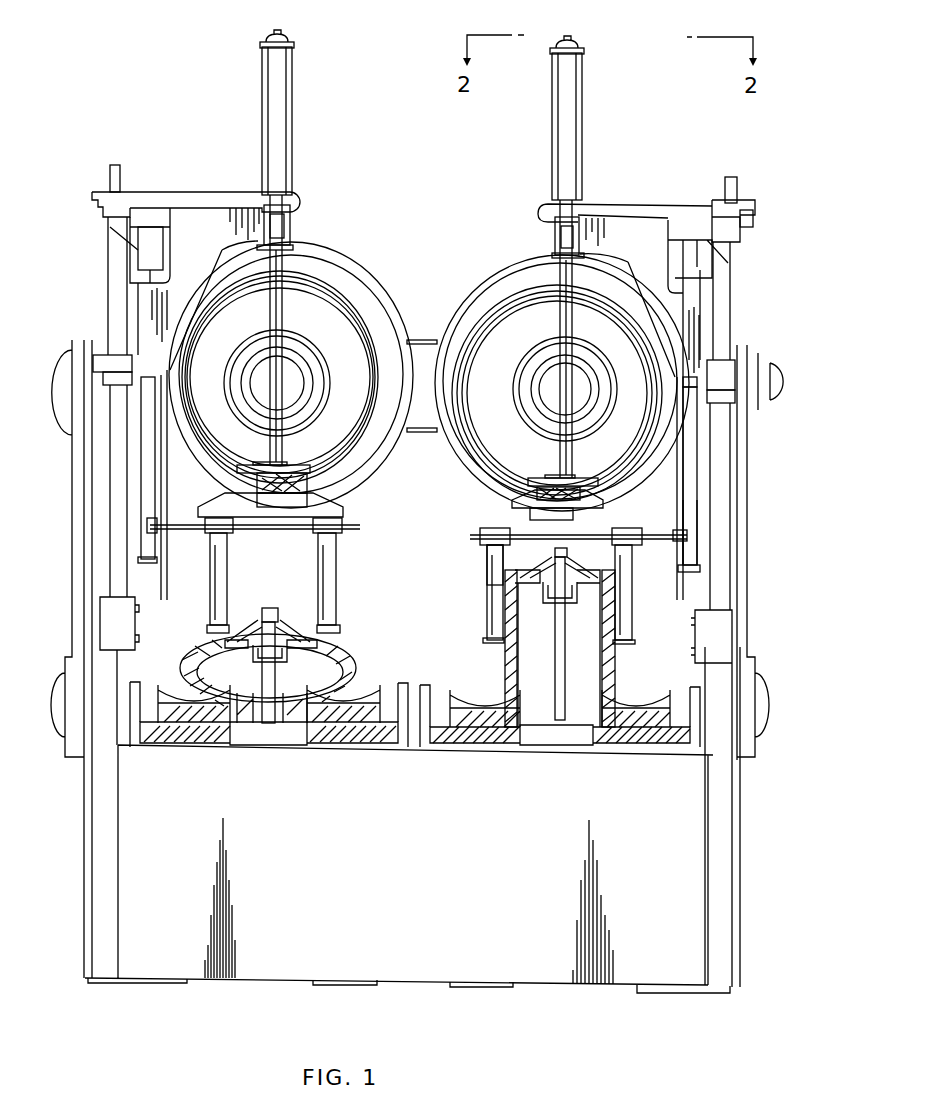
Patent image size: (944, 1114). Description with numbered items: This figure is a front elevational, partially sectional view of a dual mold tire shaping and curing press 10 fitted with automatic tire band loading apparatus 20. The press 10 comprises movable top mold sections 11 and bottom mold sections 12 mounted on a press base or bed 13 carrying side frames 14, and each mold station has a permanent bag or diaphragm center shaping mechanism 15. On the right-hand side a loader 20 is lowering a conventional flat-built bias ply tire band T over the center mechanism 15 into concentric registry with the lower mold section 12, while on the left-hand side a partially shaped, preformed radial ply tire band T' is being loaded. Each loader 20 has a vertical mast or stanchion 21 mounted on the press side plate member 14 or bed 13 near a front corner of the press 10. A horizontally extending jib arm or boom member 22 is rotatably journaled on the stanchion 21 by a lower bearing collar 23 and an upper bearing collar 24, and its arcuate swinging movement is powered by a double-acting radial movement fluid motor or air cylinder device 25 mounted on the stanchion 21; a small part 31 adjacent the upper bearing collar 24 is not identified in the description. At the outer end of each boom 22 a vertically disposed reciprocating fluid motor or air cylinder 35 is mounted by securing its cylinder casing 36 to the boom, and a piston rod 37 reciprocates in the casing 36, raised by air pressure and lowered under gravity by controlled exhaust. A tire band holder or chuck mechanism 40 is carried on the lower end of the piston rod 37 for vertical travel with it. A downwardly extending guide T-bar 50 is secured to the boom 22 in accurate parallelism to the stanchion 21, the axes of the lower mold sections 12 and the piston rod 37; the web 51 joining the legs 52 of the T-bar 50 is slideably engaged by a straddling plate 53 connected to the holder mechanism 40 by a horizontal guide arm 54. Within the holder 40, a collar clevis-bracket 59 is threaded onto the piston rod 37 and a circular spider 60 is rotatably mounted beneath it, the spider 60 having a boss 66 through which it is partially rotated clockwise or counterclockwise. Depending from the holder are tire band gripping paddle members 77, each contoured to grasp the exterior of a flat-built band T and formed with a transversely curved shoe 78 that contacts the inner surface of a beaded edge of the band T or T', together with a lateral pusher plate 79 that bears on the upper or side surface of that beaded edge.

The dual tire shaping and curing press 10 is at (752, 795).
The top mold sections 11 is at (348, 281).
The bottom mold sections 12 is at (386, 690).
The press base or bed 13 is at (706, 851).
The side frames 14 is at (103, 788).
The center shaping mechanism 15 is at (335, 642).
The automatic tire band loading apparatus 20 is at (218, 186).
The vertical mast or stanchion 21 is at (112, 518).
The jib arm or boom member 22 is at (177, 203).
The lower bearing collar 23 is at (110, 365).
The upper bearing collar 24 is at (113, 193).
The radial movement fluid motor 25 is at (130, 264).
The lug 31 is at (754, 223).
The reciprocating fluid motor 35 is at (300, 101).
The cylinder casing 36 is at (283, 142).
The piston rod 37 is at (290, 260).
The tire band holder or chuck mechanism 40 is at (342, 486).
The guide T-bar 50 is at (137, 548).
The web 51 is at (147, 477).
The legs 52 is at (699, 555).
The straddling plate 53 is at (155, 536).
The horizontal guide arm 54 is at (182, 530).
The collar clevis-bracket 59 is at (272, 473).
The circular spider 60 is at (350, 516).
The boss 66 is at (283, 502).
The tire band gripping paddle member 77 is at (337, 578).
The shoe 78 is at (500, 562).
The pusher plate 79 is at (203, 629).
The flat-built tire band T is at (586, 648).
The preformed radial ply tire band T' is at (286, 666).